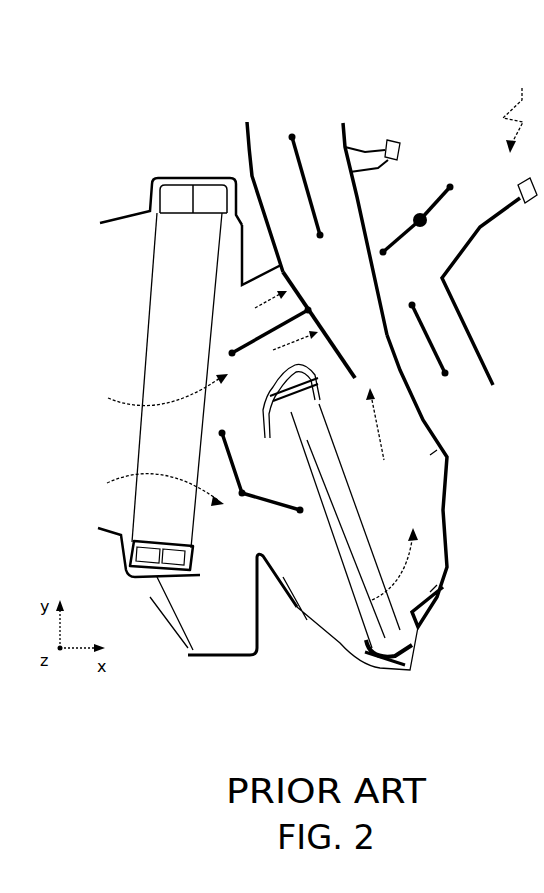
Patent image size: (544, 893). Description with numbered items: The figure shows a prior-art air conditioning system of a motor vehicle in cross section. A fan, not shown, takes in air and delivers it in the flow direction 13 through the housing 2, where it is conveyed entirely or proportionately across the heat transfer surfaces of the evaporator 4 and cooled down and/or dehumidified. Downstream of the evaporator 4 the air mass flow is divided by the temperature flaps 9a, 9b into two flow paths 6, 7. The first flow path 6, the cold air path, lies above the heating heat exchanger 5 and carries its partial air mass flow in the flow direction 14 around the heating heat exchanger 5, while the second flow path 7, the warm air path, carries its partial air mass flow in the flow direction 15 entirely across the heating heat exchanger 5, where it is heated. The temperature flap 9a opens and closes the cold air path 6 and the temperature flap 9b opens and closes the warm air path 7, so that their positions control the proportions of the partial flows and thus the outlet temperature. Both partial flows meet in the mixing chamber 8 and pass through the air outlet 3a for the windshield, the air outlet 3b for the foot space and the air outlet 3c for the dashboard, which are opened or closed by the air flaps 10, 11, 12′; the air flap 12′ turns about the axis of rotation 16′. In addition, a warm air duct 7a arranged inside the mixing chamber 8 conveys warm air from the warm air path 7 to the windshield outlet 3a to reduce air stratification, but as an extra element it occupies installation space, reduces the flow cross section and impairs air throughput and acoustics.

The housing 2 is at (246, 160).
The air outlet for the windshield 3a is at (318, 116).
The air outlet for the foot space 3b is at (478, 416).
The air outlet for the dashboard 3c is at (455, 168).
The evaporator 4 is at (162, 363).
The heating heat exchanger 5 is at (350, 567).
The first flow path 6 is at (248, 331).
The second flow path 7 is at (412, 510).
The warm air duct 7a is at (360, 291).
The mixing chamber 8 is at (398, 291).
The temperature flap 9a is at (260, 340).
The temperature flap 9b is at (260, 508).
The air flap 10 is at (298, 155).
The air flap 11 is at (430, 345).
The air flap 12′ is at (438, 203).
The flow direction 13 is at (123, 467).
The flow direction 14 is at (286, 274).
The flow direction 15 is at (376, 410).
The axis of rotation 16′ is at (427, 224).